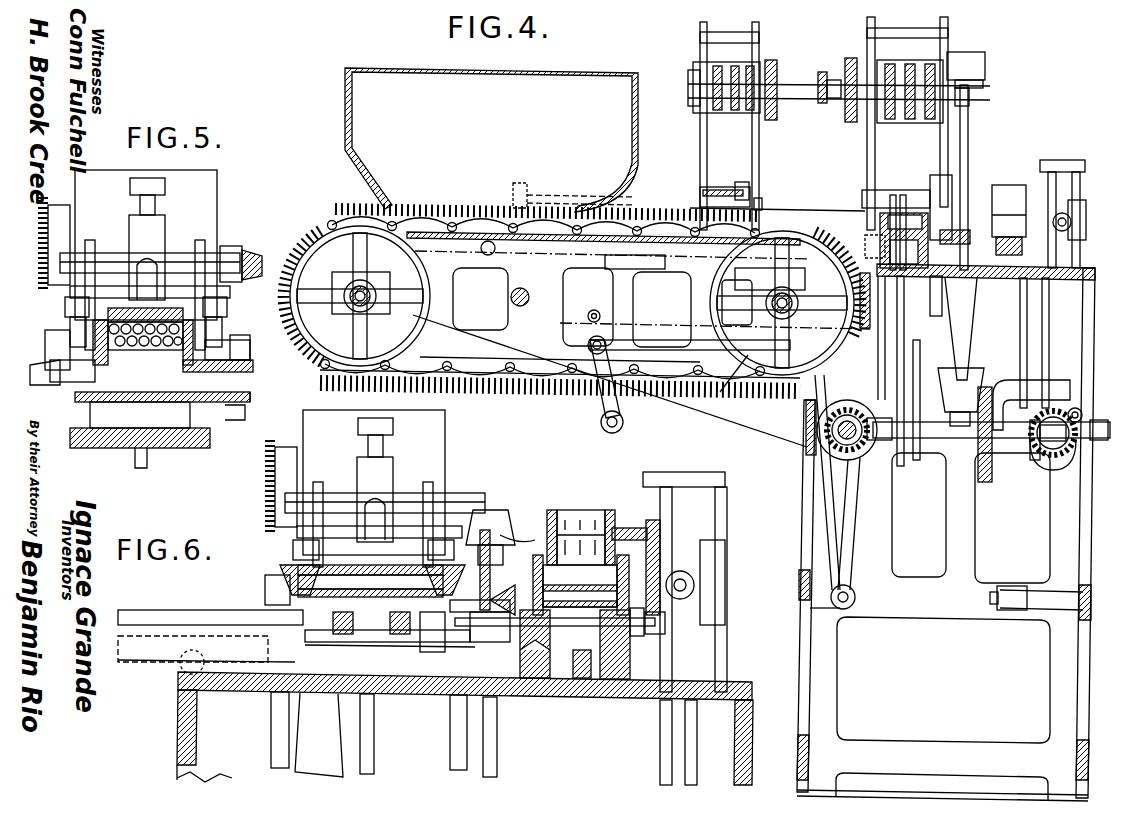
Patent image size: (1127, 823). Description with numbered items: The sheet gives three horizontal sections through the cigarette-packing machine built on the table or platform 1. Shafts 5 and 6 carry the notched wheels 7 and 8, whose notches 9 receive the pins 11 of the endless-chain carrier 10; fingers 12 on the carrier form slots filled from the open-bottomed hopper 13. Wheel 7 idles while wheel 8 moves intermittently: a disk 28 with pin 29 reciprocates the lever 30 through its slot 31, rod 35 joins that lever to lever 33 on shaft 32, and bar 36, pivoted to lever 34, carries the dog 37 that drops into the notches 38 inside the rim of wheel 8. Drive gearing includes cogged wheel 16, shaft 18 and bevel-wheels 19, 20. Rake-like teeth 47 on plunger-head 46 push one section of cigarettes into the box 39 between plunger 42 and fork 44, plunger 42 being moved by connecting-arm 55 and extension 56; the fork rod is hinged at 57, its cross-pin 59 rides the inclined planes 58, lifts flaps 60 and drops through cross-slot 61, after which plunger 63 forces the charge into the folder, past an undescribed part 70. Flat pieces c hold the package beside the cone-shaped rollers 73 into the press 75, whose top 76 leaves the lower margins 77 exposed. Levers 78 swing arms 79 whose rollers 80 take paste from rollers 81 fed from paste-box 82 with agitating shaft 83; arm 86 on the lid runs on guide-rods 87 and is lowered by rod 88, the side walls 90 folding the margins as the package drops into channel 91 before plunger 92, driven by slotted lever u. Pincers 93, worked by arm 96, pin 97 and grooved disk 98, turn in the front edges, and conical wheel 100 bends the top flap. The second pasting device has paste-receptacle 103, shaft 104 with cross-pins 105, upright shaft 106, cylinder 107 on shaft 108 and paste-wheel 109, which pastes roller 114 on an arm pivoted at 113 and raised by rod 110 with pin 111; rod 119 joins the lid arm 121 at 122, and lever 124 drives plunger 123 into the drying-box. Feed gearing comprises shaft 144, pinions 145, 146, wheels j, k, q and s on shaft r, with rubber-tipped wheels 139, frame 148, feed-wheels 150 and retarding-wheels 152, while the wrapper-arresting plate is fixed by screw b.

In FIG. 4, the table or platform 1 is at (1050, 553).
In FIG. 5, the table or platform 1 is at (205, 448).
In FIG. 6, the table or platform 1 is at (753, 730).
In FIG. 4, the shaft 5 is at (345, 300).
In FIG. 4, the shaft 6 is at (766, 302).
In FIG. 4, the sprocket or notched wheel 7 is at (357, 296).
In FIG. 4, the sprocket or notched wheel 8 is at (785, 303).
In FIG. 4, the notches 9 is at (430, 318).
In FIG. 4, the endless-chain carrier 10 is at (365, 214).
In FIG. 4, the spindle or pin 11 is at (328, 226).
In FIG. 4, the projecting fingers 12 is at (775, 390).
In FIG. 5, the projecting fingers 12 is at (270, 380).
In FIG. 4, the box or hopper 13 is at (491, 140).
In FIG. 4, the cogged wheel 16 is at (980, 480).
In FIG. 4, the shaft 18 is at (962, 440).
In FIG. 4, the bevel-wheel 19 is at (1036, 470).
In FIG. 4, the wheel 20 is at (1062, 452).
In FIG. 4, the disk 28 is at (866, 452).
In FIG. 4, the pin 29 is at (808, 410).
In FIG. 4, the lever 30 is at (826, 538).
In FIG. 4, the slot 31 is at (835, 462).
In FIG. 4, the shaft 32 is at (600, 423).
In FIG. 4, the lever 33 is at (588, 316).
In FIG. 4, the lever 34 is at (590, 358).
In FIG. 4, the rod or bar 35 is at (664, 338).
In FIG. 4, the bar 36 is at (684, 350).
In FIG. 4, the pawl or dog 37 is at (738, 306).
In FIG. 4, the notches 38 is at (722, 392).
In FIG. 4, the box 39 is at (861, 234).
In FIG. 4, the plunger 42 is at (700, 210).
In FIG. 4, the fork 44 is at (768, 208).
In FIG. 4, the head 46 is at (712, 188).
In FIG. 4, the teeth 47 is at (738, 182).
In FIG. 4, the connecting-arm 55 is at (523, 282).
In FIG. 4, the extension 56 is at (482, 249).
In FIG. 4, the hinge 57 is at (522, 190).
In FIG. 4, the inclined planes 58 is at (903, 195).
In FIG. 4, the cross-pin 59 is at (760, 198).
In FIG. 4, the doors or flaps 60 is at (893, 195).
In FIG. 4, the cross-slot 61 is at (862, 195).
In FIG. 4, the plunger 63 is at (885, 225).
In FIG. 5, the bracket 70 is at (72, 366).
In FIG. 6, the cone-shaped rollers 73 is at (370, 581).
In FIG. 5, the press 75 is at (50, 338).
In FIG. 5, the vertically-moving top 76 is at (110, 352).
In FIG. 5, the lower side margins 77 is at (212, 345).
In FIG. 5, the levers 78 is at (75, 393).
In FIG. 6, the levers 78 is at (271, 730).
In FIG. 5, the arms 79 is at (248, 348).
In FIG. 5, the rollers 80 is at (65, 310).
In FIG. 6, the rollers 80 is at (293, 546).
In FIG. 5, the paste-carrying rollers 81 is at (92, 240).
In FIG. 6, the paste-carrying rollers 81 is at (320, 482).
In FIG. 5, the paste-box 82 is at (217, 200).
In FIG. 6, the paste-box 82 is at (445, 448).
In FIG. 5, the shaft 83 is at (55, 210).
In FIG. 6, the shaft 83 is at (280, 450).
In FIG. 5, the arm 86 is at (147, 268).
In FIG. 6, the arm 86 is at (376, 505).
In FIG. 5, the guide-rods 87 is at (156, 205).
In FIG. 6, the guide-rods 87 is at (383, 444).
In FIG. 4, the rod 88 is at (904, 335).
In FIG. 5, the rod 88 is at (147, 460).
In FIG. 6, the rod 88 is at (374, 742).
In FIG. 5, the side walls 90 is at (185, 358).
In FIG. 5, the channel 91 is at (162, 385).
In FIG. 5, the plunger 92 is at (40, 363).
In FIG. 6, the plunger 92 is at (208, 612).
In FIG. 6, the pincers 93 is at (355, 636).
In FIG. 6, the arm 96 is at (417, 639).
In FIG. 6, the pin 97 is at (440, 690).
In FIG. 6, the revolving disk 98 is at (512, 678).
In FIG. 4, the conical wheel 100 is at (950, 209).
In FIG. 6, the conical wheel 100 is at (480, 621).
In FIG. 4, the paste-receptacle 103 is at (1008, 190).
In FIG. 6, the paste-receptacle 103 is at (550, 512).
In FIG. 6, the shaft 104 is at (612, 528).
In FIG. 6, the cross-pins 105 is at (570, 520).
In FIG. 6, the upright shaft 106 is at (497, 748).
In FIG. 6, the cylinder 107 is at (580, 586).
In FIG. 6, the shaft 108 is at (562, 569).
In FIG. 4, the paste-wheel 109 is at (1040, 462).
In FIG. 4, the upright rod 110 is at (1035, 318).
In FIG. 6, the upright rod 110 is at (660, 740).
In FIG. 4, the pin 111 is at (1058, 410).
In FIG. 4, the pivot 113 is at (1014, 232).
In FIG. 6, the pivot 113 is at (640, 636).
In FIG. 6, the roller 114 is at (612, 679).
In FIG. 6, the upright rod 119 is at (697, 748).
In FIG. 4, the arm of the lid 121 is at (1078, 232).
In FIG. 6, the arm of the lid 121 is at (712, 605).
In FIG. 4, the pivotal connection 122 is at (1072, 220).
In FIG. 6, the pivotal connection 122 is at (694, 585).
In FIG. 4, the plunger 123 is at (1030, 343).
In FIG. 6, the plunger 123 is at (582, 678).
In FIG. 4, the lever 124 is at (1012, 518).
In FIG. 4, the rubber-tipped wheels 139 is at (950, 58).
In FIG. 4, the upright shaft 144 is at (970, 145).
In FIG. 4, the pinion 145 is at (975, 84).
In FIG. 4, the beveled pinion 146 is at (972, 98).
In FIG. 4, the upright frame 148 is at (760, 128).
In FIG. 4, the wheels 150 is at (700, 100).
In FIG. 4, the retarding-wheels 152 is at (708, 62).
In FIG. 4, the wheel s is at (776, 62).
In FIG. 4, the wheel q is at (822, 72).
In FIG. 4, the shaft r is at (810, 84).
In FIG. 4, the wheel or pinion j is at (851, 58).
In FIG. 4, the wheel k is at (905, 62).
In FIG. 4, the screw b is at (936, 296).
In FIG. 4, the lever u is at (860, 503).
In FIG. 6, the lever u is at (319, 735).
In FIG. 6, the flat pieces c is at (292, 577).